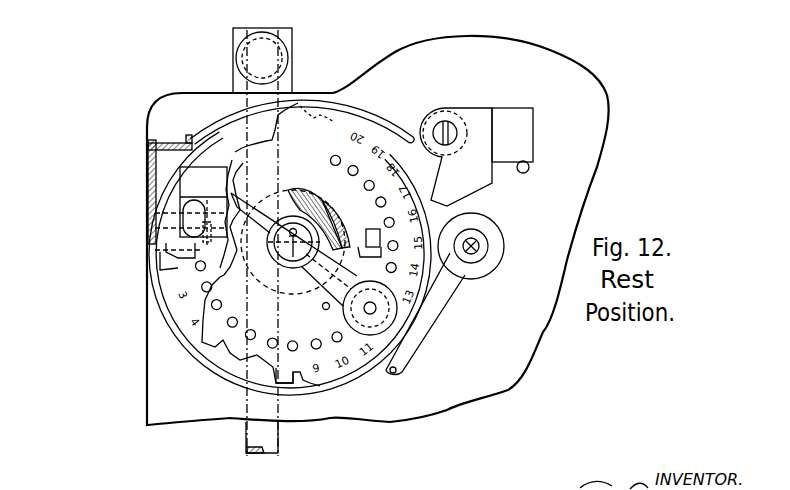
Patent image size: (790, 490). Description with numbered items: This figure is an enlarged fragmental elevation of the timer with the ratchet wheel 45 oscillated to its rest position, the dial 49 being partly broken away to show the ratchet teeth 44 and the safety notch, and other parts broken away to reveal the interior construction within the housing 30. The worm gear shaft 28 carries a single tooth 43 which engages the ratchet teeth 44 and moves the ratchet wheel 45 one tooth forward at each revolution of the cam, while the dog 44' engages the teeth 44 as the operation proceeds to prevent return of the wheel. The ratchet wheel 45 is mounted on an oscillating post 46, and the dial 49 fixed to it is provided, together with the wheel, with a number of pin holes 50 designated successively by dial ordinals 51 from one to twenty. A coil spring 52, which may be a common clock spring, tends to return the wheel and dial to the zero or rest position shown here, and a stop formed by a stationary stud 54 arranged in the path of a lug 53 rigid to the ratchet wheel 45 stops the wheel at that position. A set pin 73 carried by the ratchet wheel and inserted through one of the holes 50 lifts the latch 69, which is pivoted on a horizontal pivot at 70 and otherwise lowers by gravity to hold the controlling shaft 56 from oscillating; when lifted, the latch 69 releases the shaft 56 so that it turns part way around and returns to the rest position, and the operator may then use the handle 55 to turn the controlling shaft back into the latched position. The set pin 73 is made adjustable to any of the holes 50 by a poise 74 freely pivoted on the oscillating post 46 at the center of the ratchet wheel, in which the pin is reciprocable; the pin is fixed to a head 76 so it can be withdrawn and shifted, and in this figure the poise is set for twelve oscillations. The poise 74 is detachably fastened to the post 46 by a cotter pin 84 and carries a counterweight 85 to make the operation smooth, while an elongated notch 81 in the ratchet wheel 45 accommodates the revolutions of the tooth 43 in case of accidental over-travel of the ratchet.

The worm gear shaft 28 is at (490, 240).
The housing 30 is at (378, 230).
The single tooth 43 is at (463, 268).
The ratchet teeth 44 is at (290, 256).
The dog 44' is at (476, 157).
The ratchet wheel 45 is at (177, 262).
The oscillating post 46 is at (279, 265).
The dial 49 is at (293, 258).
The pin holes 50 is at (212, 287).
The dial ordinals 51 is at (380, 362).
The coil spring 52 is at (322, 206).
The lug 53 is at (402, 260).
The stationary stud 54 is at (370, 229).
The handle 55 is at (288, 50).
The controlling shaft 56 is at (278, 453).
The latch 69 is at (210, 203).
The horizontal pivot 70 is at (167, 217).
The set pin 73 is at (373, 310).
The poise 74 is at (325, 308).
The head 76 is at (398, 308).
The elongated notch 81 is at (288, 381).
The cotter pin 84 is at (293, 258).
The counterweight 85 is at (280, 160).